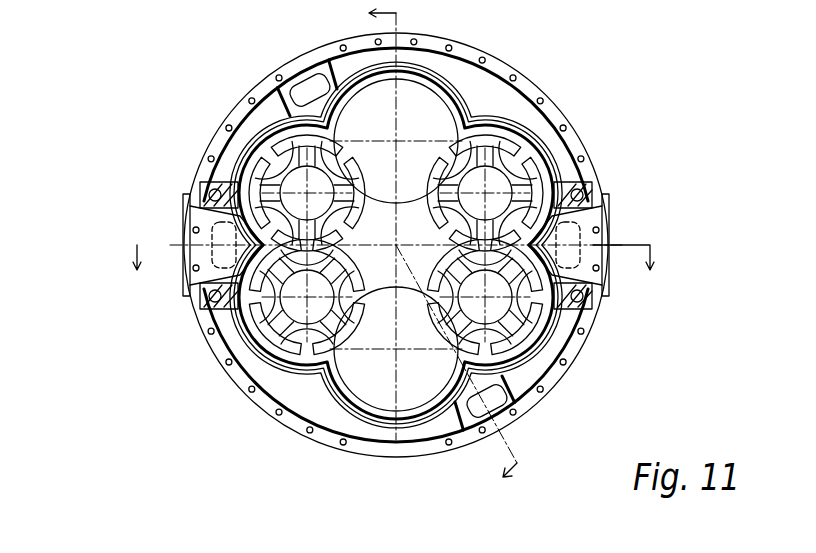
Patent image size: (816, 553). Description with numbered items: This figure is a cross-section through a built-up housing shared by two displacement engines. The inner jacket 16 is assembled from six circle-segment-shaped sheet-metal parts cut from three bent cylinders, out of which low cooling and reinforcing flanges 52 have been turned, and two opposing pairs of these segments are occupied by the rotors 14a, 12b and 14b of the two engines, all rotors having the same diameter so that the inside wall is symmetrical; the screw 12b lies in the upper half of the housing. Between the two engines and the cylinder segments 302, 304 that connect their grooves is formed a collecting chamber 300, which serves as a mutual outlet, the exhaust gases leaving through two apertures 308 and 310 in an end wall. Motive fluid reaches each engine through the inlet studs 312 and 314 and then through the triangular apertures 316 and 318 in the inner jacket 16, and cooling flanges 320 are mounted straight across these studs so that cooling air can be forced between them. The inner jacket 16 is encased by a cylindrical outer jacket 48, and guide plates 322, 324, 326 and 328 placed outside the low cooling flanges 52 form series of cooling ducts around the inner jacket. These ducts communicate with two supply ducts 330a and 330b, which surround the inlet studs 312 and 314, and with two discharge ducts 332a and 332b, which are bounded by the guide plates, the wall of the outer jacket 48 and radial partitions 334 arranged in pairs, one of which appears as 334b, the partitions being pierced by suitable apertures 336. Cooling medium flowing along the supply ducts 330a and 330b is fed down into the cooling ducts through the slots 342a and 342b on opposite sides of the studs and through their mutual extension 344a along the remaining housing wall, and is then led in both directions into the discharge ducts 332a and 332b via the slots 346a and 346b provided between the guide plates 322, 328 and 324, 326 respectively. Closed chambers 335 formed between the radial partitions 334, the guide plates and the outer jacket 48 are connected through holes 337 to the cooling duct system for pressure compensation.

The rotor 12b is at (517, 115).
The rotor 14a is at (200, 213).
The rotor 14b is at (555, 343).
The inner jacket 16 is at (273, 373).
The outer jacket 48 is at (323, 431).
The cooling and reinforcing flanges 52 is at (293, 383).
The collecting chamber 300 is at (396, 249).
The cylinder segment 302 is at (405, 382).
The cylinder segment 304 is at (313, 59).
The aperture 308 is at (407, 150).
The aperture 310 is at (396, 440).
The inlet stud 312 is at (195, 233).
The inlet stud 314 is at (593, 271).
The triangular aperture 316 is at (565, 353).
The triangular aperture 318 is at (210, 306).
The cooling flanges 320 is at (192, 291).
The guide plate 322 is at (275, 107).
The guide plate 324 is at (307, 433).
The guide plate 326 is at (570, 388).
The guide plate 328 is at (425, 63).
The supply duct 330a is at (222, 184).
The supply duct 330b is at (582, 190).
The discharge duct 332a is at (288, 89).
The discharge duct 332b is at (520, 387).
The radial partitions 334 is at (350, 75).
The bolt 334b is at (575, 248).
The closed chambers 335 is at (455, 75).
The apertures 336 is at (310, 90).
The holes 337 is at (570, 173).
The slot 342a is at (208, 190).
The slot 342b is at (582, 198).
The extension 344a is at (200, 245).
The slot 346a is at (272, 123).
The slot 346b is at (500, 401).